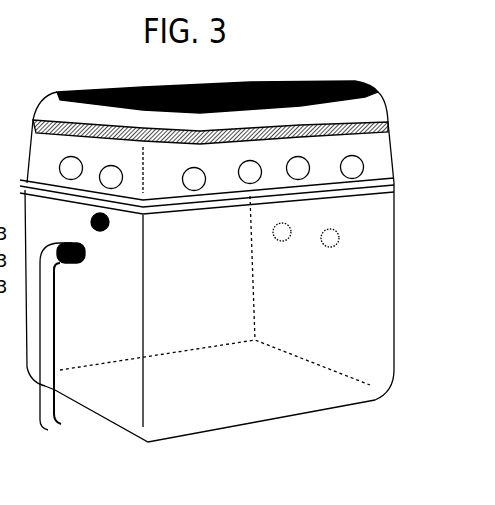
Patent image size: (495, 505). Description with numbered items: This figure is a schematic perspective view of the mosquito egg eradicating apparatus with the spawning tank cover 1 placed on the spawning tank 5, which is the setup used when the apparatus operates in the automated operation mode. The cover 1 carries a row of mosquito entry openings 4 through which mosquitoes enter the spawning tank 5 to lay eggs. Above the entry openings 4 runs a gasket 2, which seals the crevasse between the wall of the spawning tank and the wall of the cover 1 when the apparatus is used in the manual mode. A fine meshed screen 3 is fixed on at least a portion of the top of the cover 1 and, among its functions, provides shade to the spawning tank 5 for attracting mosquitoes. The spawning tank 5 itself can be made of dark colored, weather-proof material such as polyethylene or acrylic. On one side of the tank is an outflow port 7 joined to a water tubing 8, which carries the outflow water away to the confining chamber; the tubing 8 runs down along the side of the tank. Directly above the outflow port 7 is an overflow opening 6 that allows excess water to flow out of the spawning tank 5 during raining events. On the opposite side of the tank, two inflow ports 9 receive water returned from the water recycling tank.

The spawning tank cover 1 is at (50, 156).
The gasket 2 is at (390, 126).
The fine meshed screen 3 is at (350, 88).
The mosquito entry openings 4 is at (364, 167).
The spawning tank 5 is at (325, 300).
The overflow opening 6 is at (90, 221).
The outflow port 7 is at (88, 249).
The water tubing 8 is at (50, 303).
The inflow ports 9 is at (292, 225).